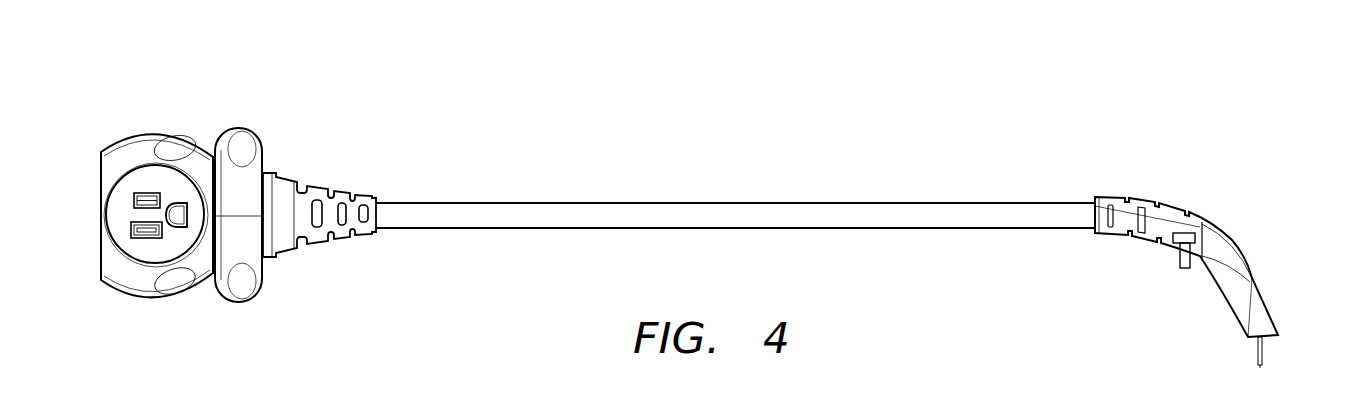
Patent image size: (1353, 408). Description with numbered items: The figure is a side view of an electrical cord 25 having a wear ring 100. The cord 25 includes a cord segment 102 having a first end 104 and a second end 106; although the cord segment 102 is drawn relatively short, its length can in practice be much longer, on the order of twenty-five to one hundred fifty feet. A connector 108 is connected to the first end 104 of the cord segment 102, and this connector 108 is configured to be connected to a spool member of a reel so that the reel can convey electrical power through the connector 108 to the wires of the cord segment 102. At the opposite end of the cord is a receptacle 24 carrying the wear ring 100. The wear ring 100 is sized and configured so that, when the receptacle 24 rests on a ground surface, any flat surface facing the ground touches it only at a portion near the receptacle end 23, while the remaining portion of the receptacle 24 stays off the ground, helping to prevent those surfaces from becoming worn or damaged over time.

The electrical cord 25 is at (690, 102).
The receptacle end 23 is at (101, 200).
The receptacle 24 is at (141, 148).
The wear ring 100 is at (240, 300).
The second end 106 is at (377, 225).
The cord segment 102 is at (694, 218).
The first end 104 is at (1086, 228).
The connector 108 is at (1230, 243).